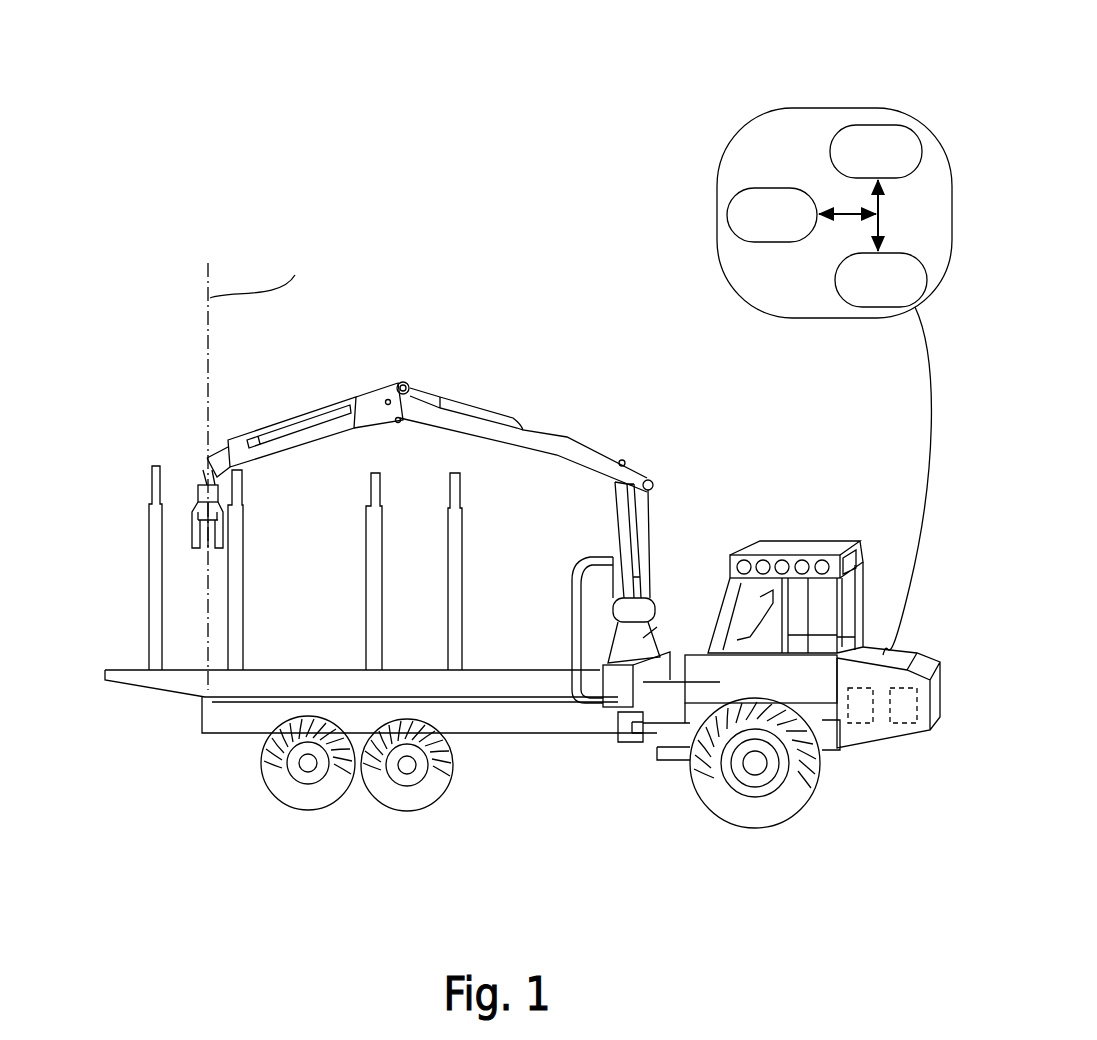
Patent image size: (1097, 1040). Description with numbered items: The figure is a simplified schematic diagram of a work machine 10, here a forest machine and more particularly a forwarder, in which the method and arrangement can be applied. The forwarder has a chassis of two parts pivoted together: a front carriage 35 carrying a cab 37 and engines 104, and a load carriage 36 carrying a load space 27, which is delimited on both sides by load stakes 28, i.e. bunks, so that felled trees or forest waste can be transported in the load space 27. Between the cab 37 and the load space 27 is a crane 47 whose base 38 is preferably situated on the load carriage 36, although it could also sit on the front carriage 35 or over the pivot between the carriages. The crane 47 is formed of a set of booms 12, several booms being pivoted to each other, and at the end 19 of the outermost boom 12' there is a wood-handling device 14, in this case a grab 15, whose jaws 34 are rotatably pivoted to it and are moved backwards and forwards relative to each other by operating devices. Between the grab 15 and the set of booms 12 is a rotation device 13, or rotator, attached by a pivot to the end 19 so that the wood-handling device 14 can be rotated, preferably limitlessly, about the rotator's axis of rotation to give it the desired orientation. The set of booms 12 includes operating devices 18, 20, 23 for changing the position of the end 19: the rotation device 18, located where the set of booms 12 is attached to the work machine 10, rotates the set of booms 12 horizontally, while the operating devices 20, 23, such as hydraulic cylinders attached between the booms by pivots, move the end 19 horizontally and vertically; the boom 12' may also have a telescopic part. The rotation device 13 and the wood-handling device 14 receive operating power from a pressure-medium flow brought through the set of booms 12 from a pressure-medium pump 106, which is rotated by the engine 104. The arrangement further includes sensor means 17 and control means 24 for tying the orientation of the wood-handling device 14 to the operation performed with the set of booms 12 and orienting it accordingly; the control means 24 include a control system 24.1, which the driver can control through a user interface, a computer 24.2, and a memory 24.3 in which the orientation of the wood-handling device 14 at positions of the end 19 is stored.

The work machine 10 is at (608, 228).
The set of booms 12 is at (397, 470).
The outermost boom 12' is at (305, 404).
The rotation device 13 is at (197, 488).
The wood-handling device 14 is at (184, 530).
The grab 15 is at (207, 525).
The sensor means 17 is at (400, 383).
The rotation device of the set of booms 18 is at (613, 593).
The end of the set of booms 19 is at (217, 449).
The operating device 20 is at (470, 407).
The operating device 23 is at (626, 522).
The control means 24 is at (883, 108).
The control system 24.1 is at (850, 297).
The computer 24.2 is at (845, 169).
The memory 24.3 is at (741, 232).
The load space 27 is at (330, 578).
The load stakes 28 is at (372, 537).
The jaws 34 is at (200, 548).
The front carriage 35 is at (787, 487).
The load carriage 36 is at (461, 811).
The cab 37 is at (805, 545).
The base of the crane 38 is at (655, 645).
The crane 47 is at (382, 283).
The engine 104 is at (903, 713).
The pressure-medium pump 106 is at (862, 715).